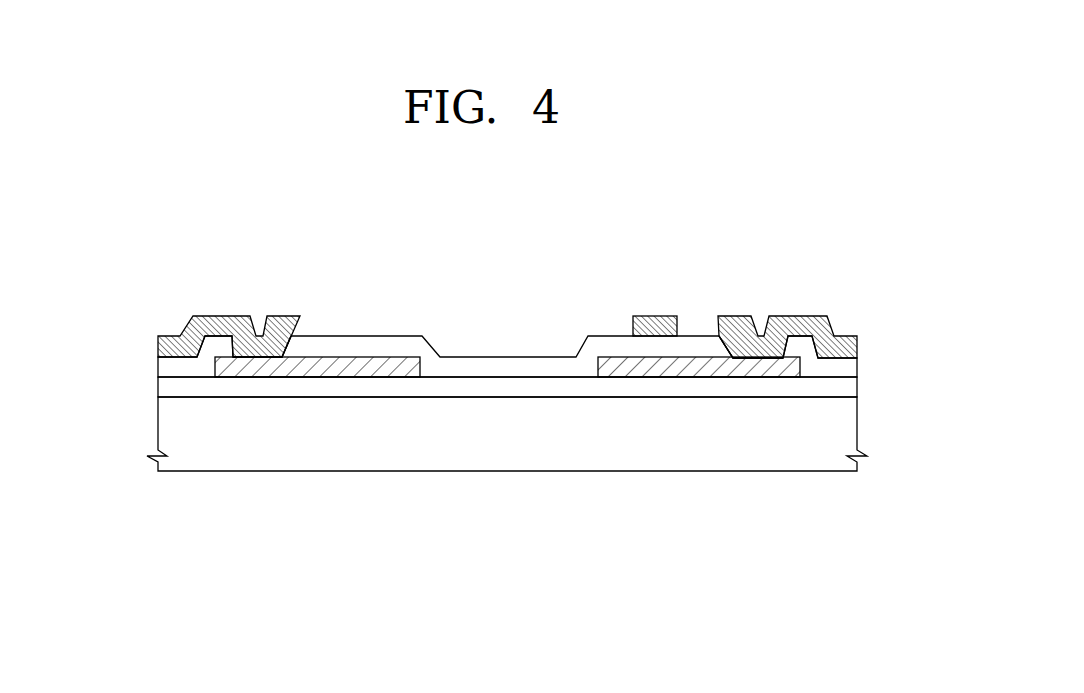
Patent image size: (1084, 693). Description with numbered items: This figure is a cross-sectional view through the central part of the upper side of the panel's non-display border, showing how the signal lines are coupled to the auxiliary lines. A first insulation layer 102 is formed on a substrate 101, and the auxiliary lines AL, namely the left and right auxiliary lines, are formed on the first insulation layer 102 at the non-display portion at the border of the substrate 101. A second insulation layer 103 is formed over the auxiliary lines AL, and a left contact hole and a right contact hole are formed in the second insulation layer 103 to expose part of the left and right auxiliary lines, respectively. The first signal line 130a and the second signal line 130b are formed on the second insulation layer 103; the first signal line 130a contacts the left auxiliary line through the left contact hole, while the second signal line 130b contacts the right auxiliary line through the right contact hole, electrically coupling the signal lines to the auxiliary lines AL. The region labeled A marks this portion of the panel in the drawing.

The substrate 101 is at (167, 430).
The first insulation layer 102 is at (167, 388).
The second insulation layer 103 is at (167, 366).
The first signal line 130a is at (228, 316).
The second signal line 130b is at (791, 316).
The auxiliary lines AL is at (627, 538).
The region A is at (840, 183).